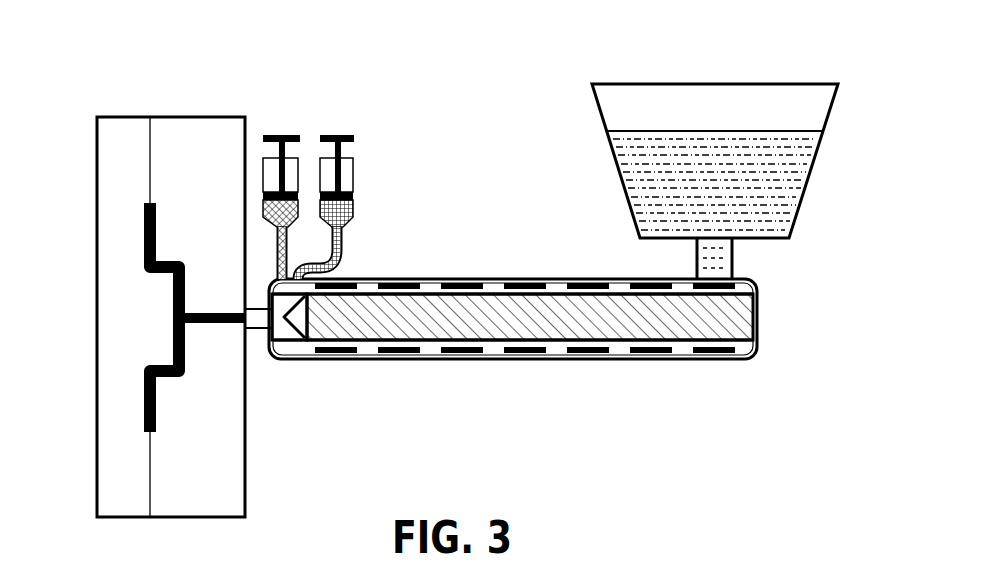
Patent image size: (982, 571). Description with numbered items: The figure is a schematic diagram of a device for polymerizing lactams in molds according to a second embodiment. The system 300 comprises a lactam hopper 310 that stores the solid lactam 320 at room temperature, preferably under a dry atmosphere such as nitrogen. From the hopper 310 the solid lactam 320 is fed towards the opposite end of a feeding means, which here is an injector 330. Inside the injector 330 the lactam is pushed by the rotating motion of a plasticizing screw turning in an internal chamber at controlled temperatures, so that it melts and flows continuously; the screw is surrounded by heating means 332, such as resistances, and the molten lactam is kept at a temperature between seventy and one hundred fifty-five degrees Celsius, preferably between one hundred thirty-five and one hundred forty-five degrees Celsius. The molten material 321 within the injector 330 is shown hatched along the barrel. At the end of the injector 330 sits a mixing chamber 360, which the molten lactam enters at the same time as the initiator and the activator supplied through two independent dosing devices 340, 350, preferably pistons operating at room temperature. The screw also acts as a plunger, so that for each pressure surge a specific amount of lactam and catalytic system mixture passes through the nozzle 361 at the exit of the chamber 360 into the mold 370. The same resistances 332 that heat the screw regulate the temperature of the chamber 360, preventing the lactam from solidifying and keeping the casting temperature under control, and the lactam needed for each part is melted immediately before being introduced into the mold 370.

The system 300 is at (776, 277).
The lactam hopper 310 is at (633, 103).
The solid lactam 320 is at (715, 123).
The melted material in barrel 321 is at (583, 317).
The injector 330 is at (573, 358).
The heating means 332 is at (408, 286).
The dosing device 340 is at (290, 177).
The dosing device 350 is at (350, 182).
The mixing chamber 360 is at (279, 328).
The nozzle 361 is at (253, 322).
The mold 370 is at (118, 217).